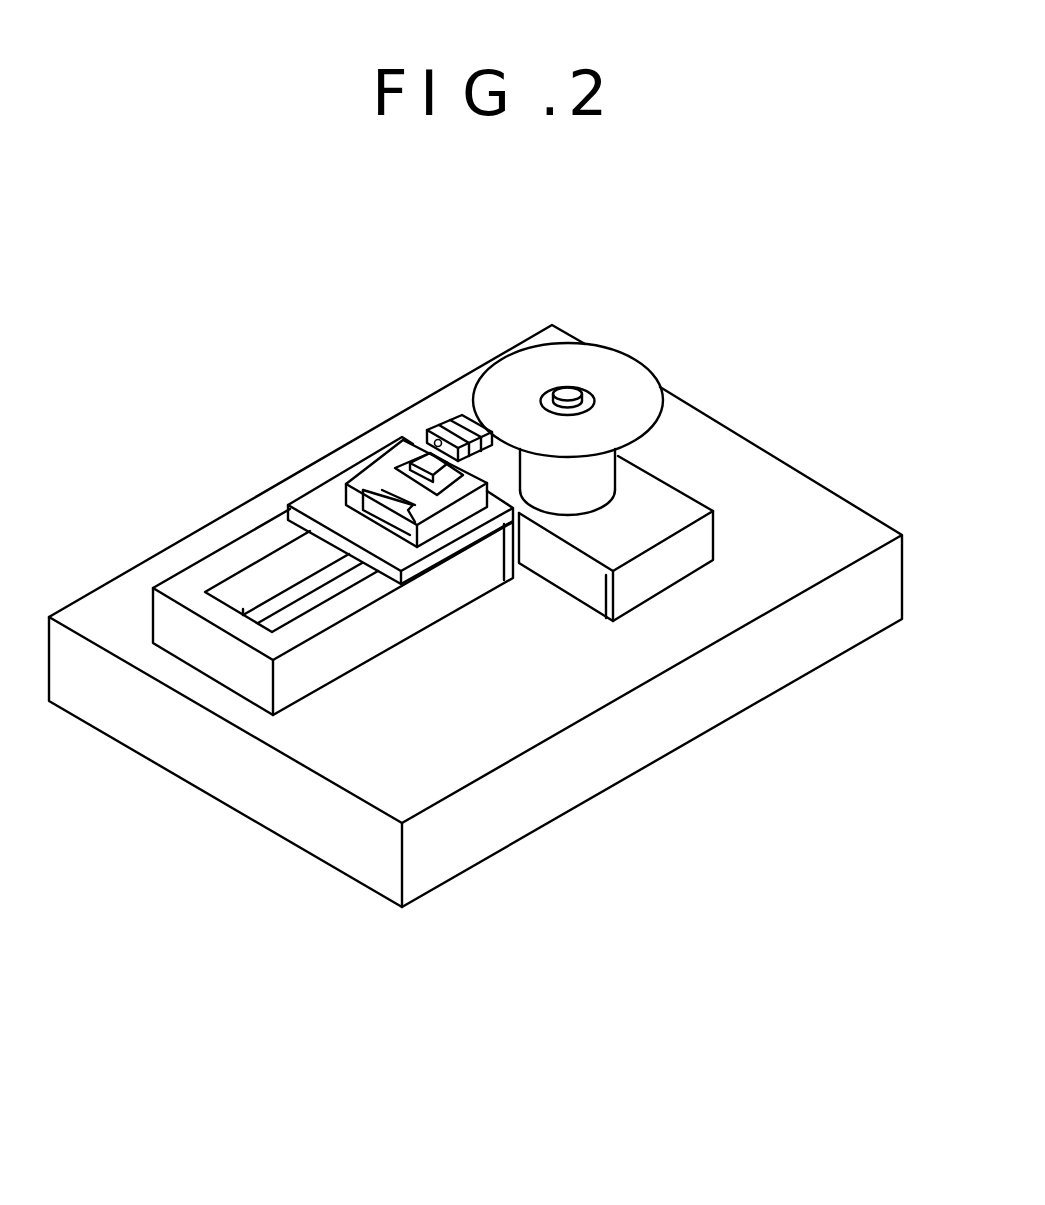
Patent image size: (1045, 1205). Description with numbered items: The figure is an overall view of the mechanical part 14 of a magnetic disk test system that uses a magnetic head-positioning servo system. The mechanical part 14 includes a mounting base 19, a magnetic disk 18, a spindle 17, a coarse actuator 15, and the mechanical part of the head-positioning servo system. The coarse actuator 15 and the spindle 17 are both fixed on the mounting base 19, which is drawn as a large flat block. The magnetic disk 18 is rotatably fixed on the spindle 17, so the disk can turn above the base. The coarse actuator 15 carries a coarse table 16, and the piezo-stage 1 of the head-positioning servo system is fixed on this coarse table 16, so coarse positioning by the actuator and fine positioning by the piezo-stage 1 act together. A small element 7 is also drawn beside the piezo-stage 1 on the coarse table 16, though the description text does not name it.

The piezo-stage 1 is at (373, 463).
The objective lens unit 7 is at (450, 420).
The mechanical part 14 is at (402, 916).
The coarse actuator 15 is at (232, 558).
The coarse table 16 is at (312, 500).
The spindle 17 is at (568, 389).
The magnetic disk 18 is at (636, 382).
The mounting base 19 is at (657, 742).